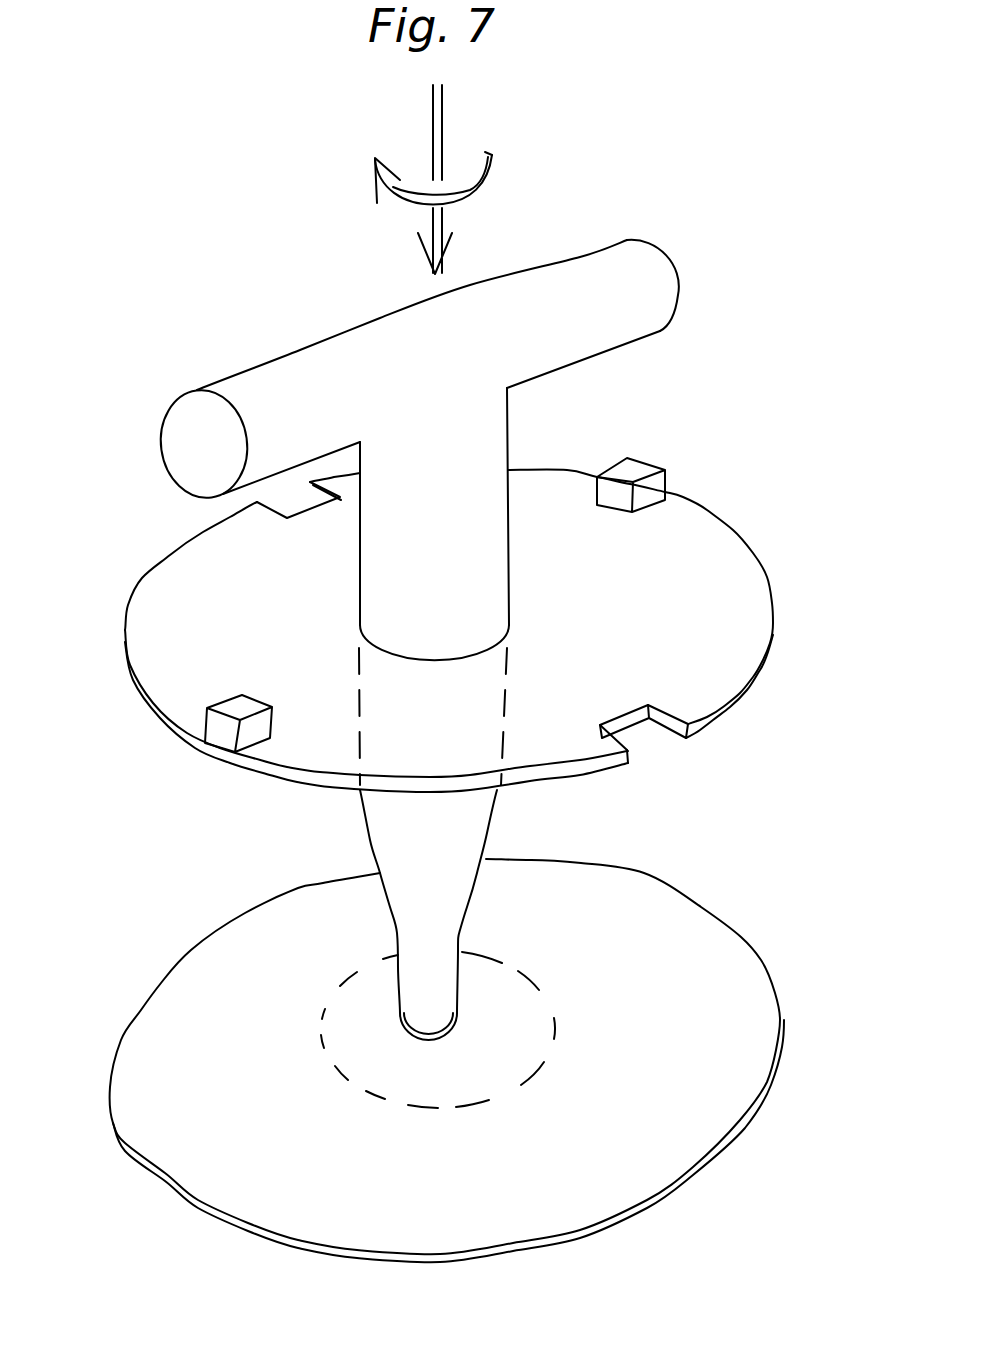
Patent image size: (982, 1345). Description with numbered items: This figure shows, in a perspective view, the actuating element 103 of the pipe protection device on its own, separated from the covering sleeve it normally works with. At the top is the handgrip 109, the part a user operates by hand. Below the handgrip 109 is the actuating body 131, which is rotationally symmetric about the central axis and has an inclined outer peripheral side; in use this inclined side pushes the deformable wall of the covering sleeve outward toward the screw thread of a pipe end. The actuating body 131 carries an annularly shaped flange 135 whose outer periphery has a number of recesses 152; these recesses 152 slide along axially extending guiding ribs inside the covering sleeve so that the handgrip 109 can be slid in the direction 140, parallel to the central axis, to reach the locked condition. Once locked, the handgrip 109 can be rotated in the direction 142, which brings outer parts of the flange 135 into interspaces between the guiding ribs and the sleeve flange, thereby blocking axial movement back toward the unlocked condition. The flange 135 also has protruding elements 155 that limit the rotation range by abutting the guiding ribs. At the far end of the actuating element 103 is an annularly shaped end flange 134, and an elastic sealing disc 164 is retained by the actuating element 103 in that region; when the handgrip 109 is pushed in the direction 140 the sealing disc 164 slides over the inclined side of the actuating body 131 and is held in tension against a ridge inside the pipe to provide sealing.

The actuating element 103 is at (753, 230).
The handgrip 109 is at (277, 382).
The actuating body 131 is at (470, 518).
The end flange 134 is at (508, 990).
The flange 135 is at (705, 536).
The direction 140 is at (447, 115).
The direction 142 is at (480, 182).
The recesses 152 is at (292, 494).
The protruding elements 155 is at (637, 473).
The sealing disc 164 is at (747, 978).